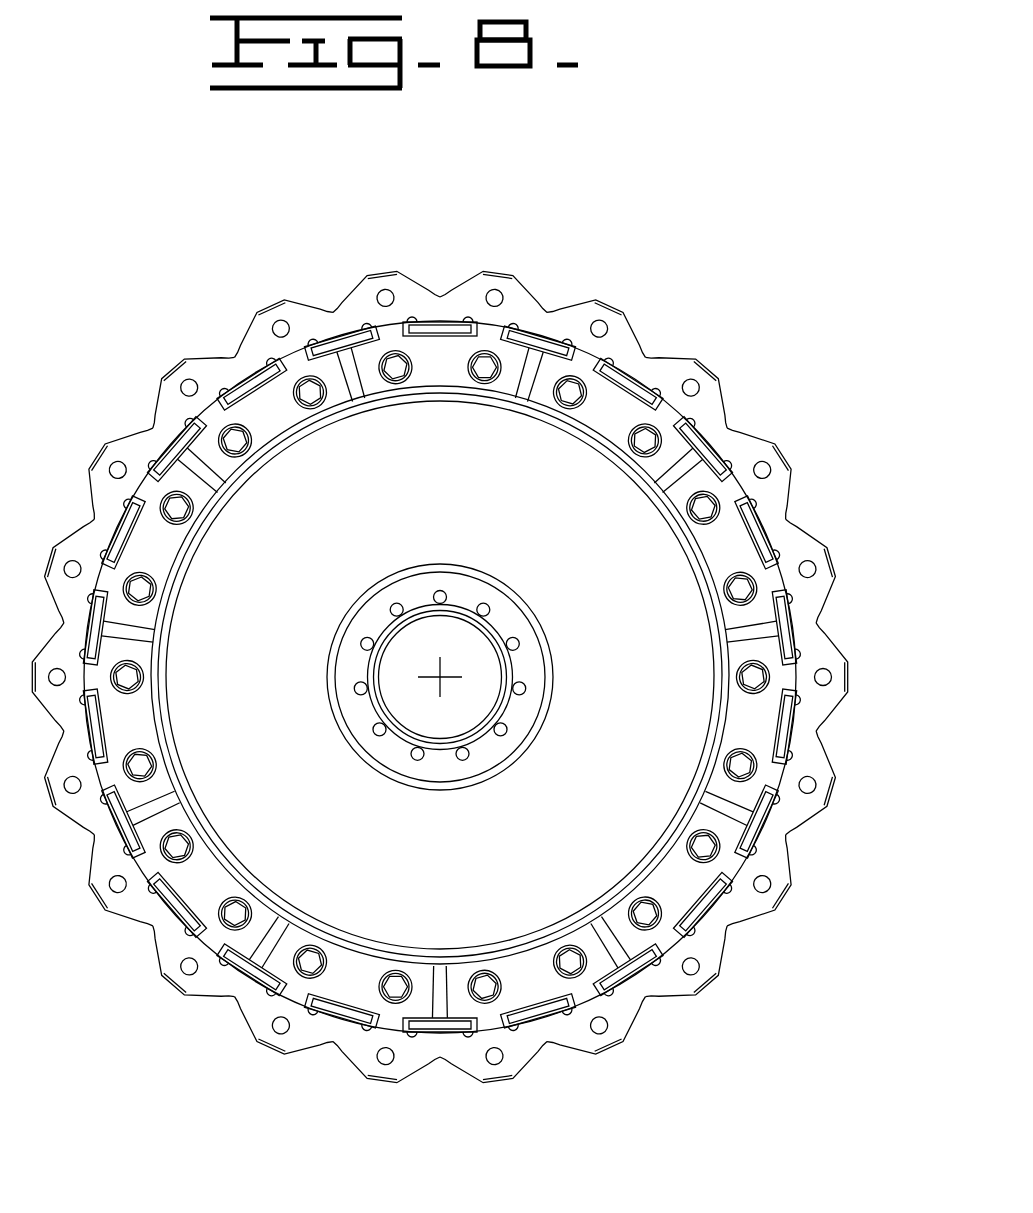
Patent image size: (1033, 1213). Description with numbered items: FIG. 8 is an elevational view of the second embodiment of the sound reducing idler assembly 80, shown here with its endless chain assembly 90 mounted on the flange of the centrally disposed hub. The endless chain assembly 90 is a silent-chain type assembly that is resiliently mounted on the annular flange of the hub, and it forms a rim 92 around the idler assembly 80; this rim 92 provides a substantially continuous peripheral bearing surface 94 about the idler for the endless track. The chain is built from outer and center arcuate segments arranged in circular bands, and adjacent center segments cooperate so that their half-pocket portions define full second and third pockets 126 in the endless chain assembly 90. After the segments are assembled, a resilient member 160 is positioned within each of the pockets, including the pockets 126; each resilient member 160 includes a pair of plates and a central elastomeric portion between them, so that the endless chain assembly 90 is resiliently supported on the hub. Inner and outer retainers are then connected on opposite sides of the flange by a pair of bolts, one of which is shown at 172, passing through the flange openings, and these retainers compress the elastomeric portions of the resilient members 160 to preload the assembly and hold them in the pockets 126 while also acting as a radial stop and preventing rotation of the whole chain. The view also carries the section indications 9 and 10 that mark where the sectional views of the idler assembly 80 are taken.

The section line 9- 9 is at (439, 628).
The section line 10- 10 is at (445, 208).
The sound reducing idler assembly 80 is at (762, 385).
The endless chain assembly 90 is at (790, 548).
The rim 92 is at (682, 355).
The peripheral bearing surface 94 is at (633, 322).
The second and third pockets 126 is at (715, 472).
The resilient member 160 is at (750, 533).
The bolt 172 is at (757, 675).